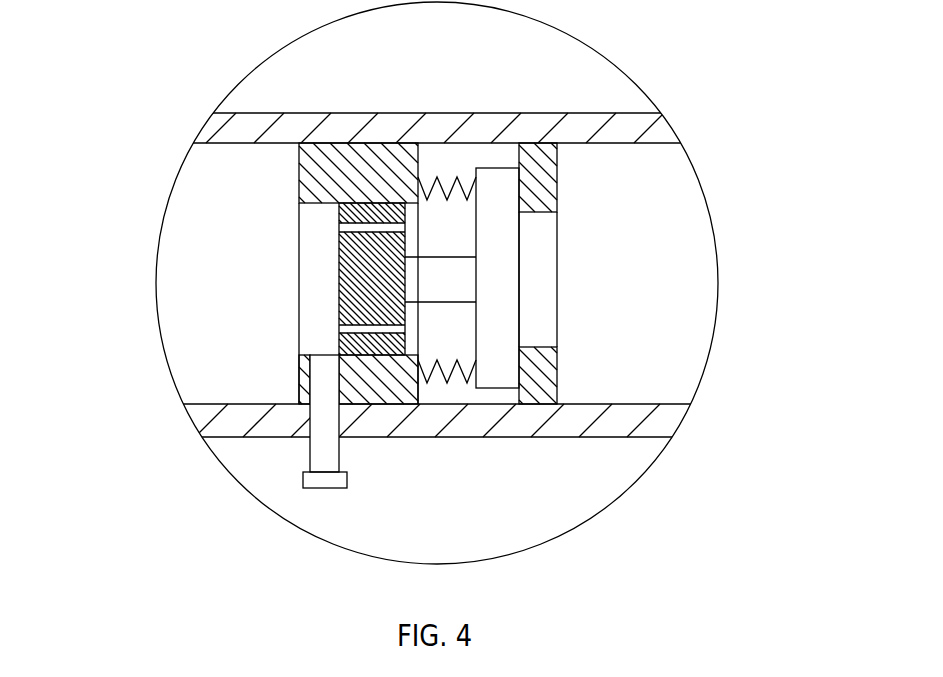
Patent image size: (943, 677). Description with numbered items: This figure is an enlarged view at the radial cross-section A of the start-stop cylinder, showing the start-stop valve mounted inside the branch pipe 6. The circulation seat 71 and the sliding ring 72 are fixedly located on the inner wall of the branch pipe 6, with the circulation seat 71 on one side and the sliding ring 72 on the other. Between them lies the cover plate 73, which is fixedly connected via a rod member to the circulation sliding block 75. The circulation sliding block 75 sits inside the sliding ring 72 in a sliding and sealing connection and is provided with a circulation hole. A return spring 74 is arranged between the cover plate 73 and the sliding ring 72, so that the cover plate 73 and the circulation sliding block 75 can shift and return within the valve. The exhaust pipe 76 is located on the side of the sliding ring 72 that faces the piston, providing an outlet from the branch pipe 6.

The radial cross-section A is at (262, 62).
The branch pipe 6 is at (247, 133).
The circulation seat 71 is at (545, 195).
The sliding ring 72 is at (325, 183).
The cover plate 73 is at (500, 285).
The return spring 74 is at (470, 362).
The circulation sliding block 75 is at (347, 343).
The exhaust pipe 76 is at (325, 390).